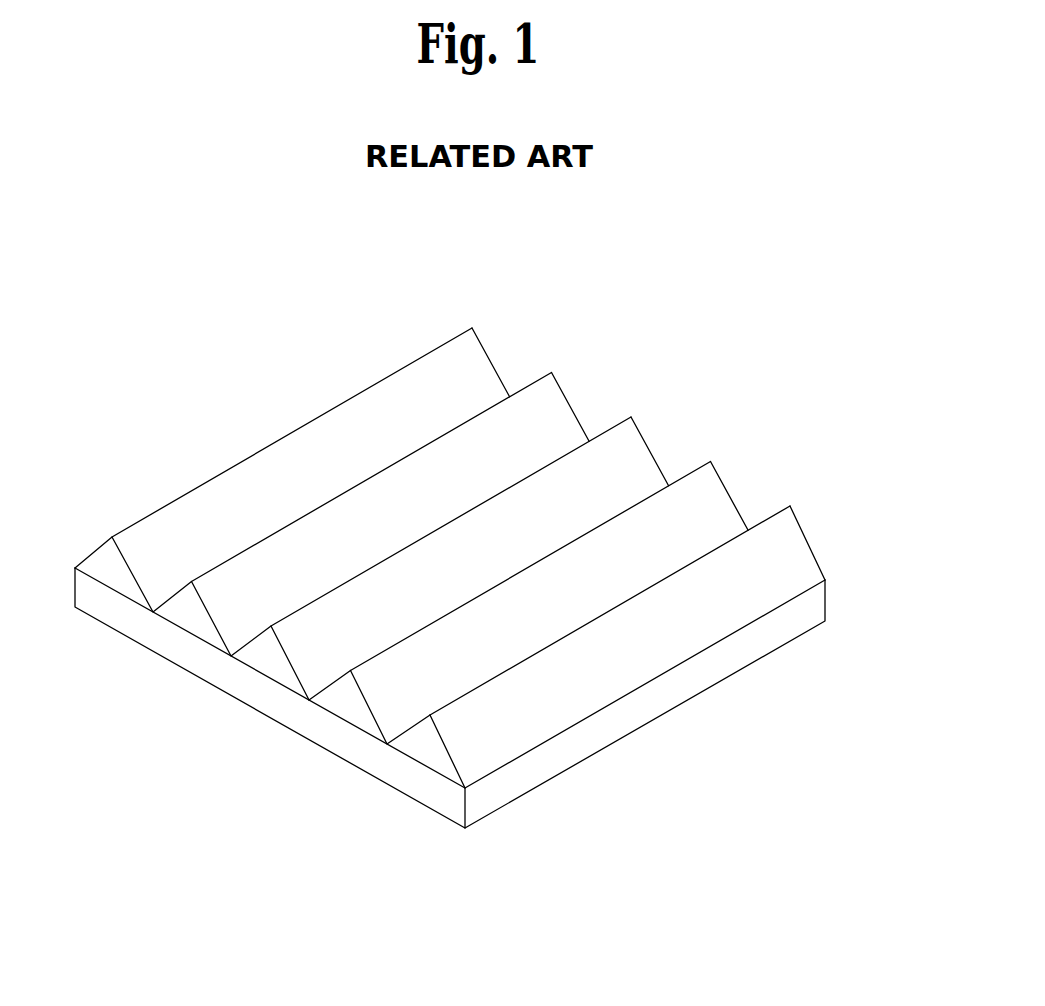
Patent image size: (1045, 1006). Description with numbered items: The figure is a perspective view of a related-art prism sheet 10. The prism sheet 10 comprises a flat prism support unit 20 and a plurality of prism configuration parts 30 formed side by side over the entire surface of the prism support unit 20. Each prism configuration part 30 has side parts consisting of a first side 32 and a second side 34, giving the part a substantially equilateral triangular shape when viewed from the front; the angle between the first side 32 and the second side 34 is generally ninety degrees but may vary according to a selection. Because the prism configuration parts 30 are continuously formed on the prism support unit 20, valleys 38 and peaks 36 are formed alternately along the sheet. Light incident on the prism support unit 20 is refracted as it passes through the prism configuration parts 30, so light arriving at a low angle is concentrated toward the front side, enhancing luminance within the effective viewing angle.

The prism sheet 10 is at (310, 312).
The prism support unit 20 is at (150, 638).
The prism configuration parts 30 is at (107, 560).
The first side 32 is at (797, 551).
The second side 34 is at (403, 731).
The peaks 36 is at (602, 432).
The valleys 38 is at (350, 670).